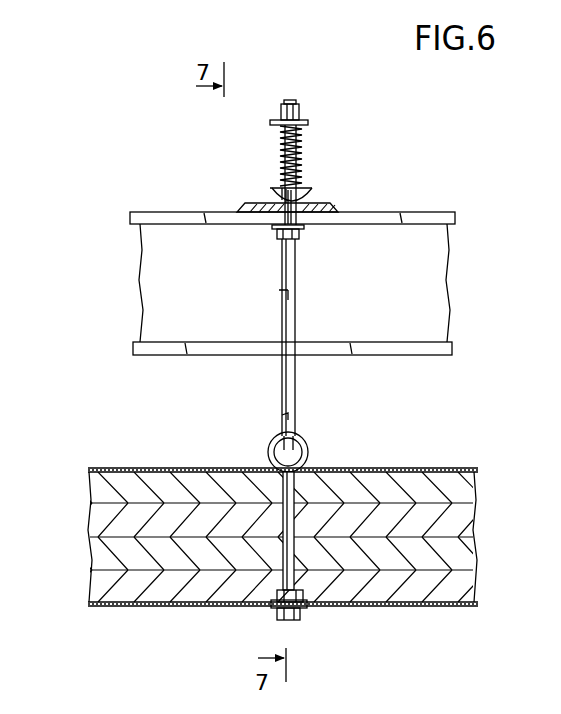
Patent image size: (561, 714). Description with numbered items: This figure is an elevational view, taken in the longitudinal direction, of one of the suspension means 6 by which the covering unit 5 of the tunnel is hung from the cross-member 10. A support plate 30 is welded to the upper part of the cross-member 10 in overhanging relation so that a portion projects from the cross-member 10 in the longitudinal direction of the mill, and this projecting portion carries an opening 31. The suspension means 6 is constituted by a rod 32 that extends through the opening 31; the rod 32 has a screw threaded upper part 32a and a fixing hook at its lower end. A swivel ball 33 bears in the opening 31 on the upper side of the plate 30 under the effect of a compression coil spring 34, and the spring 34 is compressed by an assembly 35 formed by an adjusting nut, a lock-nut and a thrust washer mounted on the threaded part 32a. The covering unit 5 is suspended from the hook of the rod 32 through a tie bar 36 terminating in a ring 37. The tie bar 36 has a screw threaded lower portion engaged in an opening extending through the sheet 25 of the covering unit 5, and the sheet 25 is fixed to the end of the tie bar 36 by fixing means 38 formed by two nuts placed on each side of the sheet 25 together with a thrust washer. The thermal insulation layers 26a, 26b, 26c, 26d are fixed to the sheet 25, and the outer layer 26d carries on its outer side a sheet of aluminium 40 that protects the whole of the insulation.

The covering unit 5 is at (445, 610).
The suspension means 6 is at (298, 400).
The cross-member 10 is at (440, 284).
The sheet 25 is at (395, 607).
The thermal insulation layer 26a is at (275, 586).
The thermal insulation layer 26b is at (275, 553).
The thermal insulation layer 26c is at (275, 520).
The outer layer of thermal insulation material 26d is at (275, 487).
The support plate 30 is at (340, 204).
The opening 31 is at (312, 209).
The rod 32 is at (296, 272).
The screw threaded upper part 32a is at (306, 156).
The swivel ball 33 is at (268, 196).
The compression coil spring 34 is at (302, 131).
The assembly 35 is at (298, 110).
The tie bar 36 is at (280, 487).
The ring 37 is at (306, 446).
The fixing means 38 is at (304, 616).
The sheet of aluminium 40 is at (126, 470).